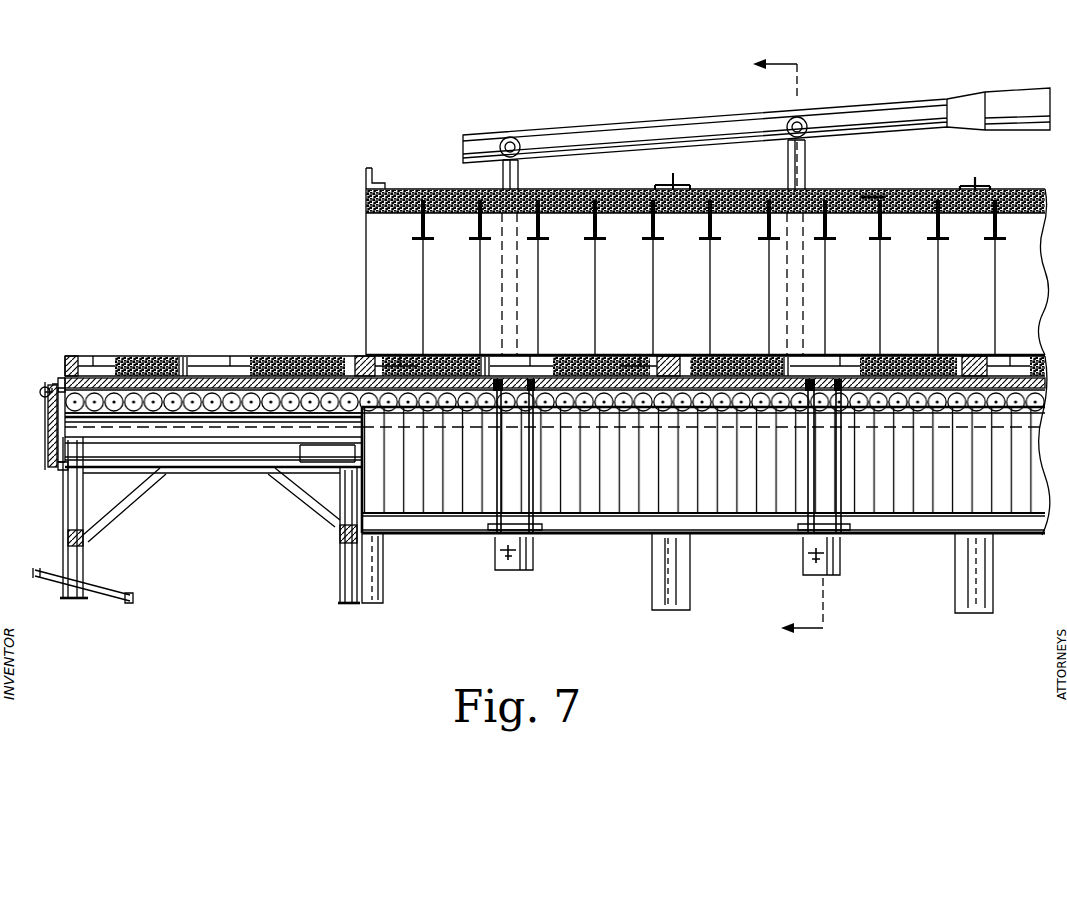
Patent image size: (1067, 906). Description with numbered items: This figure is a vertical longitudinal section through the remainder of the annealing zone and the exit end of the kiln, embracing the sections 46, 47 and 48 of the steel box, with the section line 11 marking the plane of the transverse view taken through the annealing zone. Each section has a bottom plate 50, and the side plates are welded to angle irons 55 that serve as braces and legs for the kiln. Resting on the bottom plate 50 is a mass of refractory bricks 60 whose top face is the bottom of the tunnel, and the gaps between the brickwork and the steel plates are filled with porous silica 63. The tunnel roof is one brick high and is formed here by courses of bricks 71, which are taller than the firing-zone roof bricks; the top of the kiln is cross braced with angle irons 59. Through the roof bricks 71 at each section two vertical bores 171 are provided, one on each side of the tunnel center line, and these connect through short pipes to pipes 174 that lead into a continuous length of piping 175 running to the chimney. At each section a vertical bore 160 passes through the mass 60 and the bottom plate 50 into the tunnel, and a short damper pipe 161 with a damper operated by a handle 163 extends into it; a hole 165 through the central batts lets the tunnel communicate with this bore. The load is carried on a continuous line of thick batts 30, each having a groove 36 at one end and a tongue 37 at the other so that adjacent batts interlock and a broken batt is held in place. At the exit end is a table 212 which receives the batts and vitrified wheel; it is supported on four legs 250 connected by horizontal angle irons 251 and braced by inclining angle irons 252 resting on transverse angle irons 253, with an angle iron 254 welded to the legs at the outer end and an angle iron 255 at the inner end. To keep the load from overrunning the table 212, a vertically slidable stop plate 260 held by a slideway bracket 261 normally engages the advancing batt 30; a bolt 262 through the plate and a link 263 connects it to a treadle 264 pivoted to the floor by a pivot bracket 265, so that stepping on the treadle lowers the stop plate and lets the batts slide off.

The section line 11- 11 is at (790, 348).
The continuous length of piping 175 is at (857, 108).
The pipes 174 is at (501, 172).
The courses of bricks 71 is at (378, 277).
The porous silica 63 is at (872, 200).
The angle irons 59 is at (975, 180).
The vertical bores 171 is at (512, 311).
The batts 30 is at (115, 378).
The groove 36 is at (140, 388).
The tongue 37 is at (57, 383).
The stop plate 260 is at (41, 393).
The slideway bracket 261 is at (47, 419).
The bolt 262 is at (60, 465).
The link 263 is at (72, 509).
The treadle 264 is at (48, 557).
The pivot bracket 265 is at (131, 600).
The legs 250 is at (85, 600).
The horizontal angle irons 251 is at (172, 469).
The inclining angle irons 252 is at (108, 506).
The horizontal transversely extending angle irons 253 is at (70, 537).
The angle iron 254 is at (86, 447).
The angle iron 255 is at (350, 450).
The table 212 is at (228, 492).
The mass of refractory bricks 60 is at (388, 477).
The section 48 is at (440, 537).
The section 47 is at (752, 540).
The bottom plate 50 is at (456, 537).
The angle irons 55 is at (378, 594).
The section 46 is at (1018, 540).
The hole 165 is at (528, 385).
The vertical bore 160 is at (529, 490).
The damper pipe 161 is at (500, 570).
The handle 163 is at (508, 571).